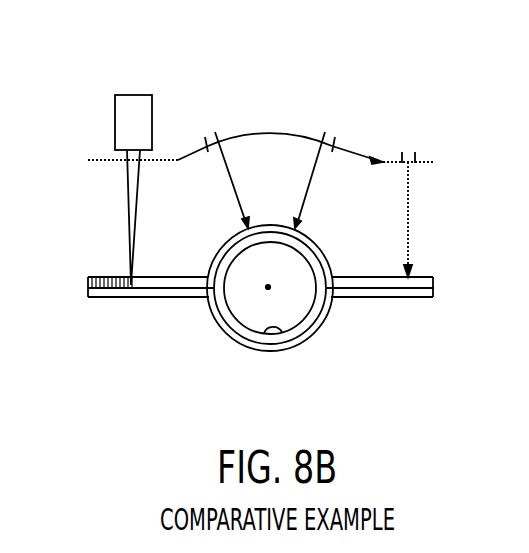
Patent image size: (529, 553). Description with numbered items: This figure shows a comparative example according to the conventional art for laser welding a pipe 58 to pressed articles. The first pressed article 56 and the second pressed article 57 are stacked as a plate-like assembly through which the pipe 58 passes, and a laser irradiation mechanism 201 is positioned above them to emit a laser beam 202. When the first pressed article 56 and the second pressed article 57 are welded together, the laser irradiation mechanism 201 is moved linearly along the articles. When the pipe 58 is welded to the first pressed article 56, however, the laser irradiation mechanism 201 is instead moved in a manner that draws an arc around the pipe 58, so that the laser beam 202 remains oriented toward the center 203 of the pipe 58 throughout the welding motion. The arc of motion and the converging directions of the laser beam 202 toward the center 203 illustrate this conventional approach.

The laser irradiation mechanism 201 is at (129, 94).
The laser beam 202 is at (232, 182).
The center of the pipe 203 is at (265, 288).
The first pressed article 56 is at (377, 277).
The second pressed article 57 is at (374, 299).
The pipe 58 is at (279, 322).